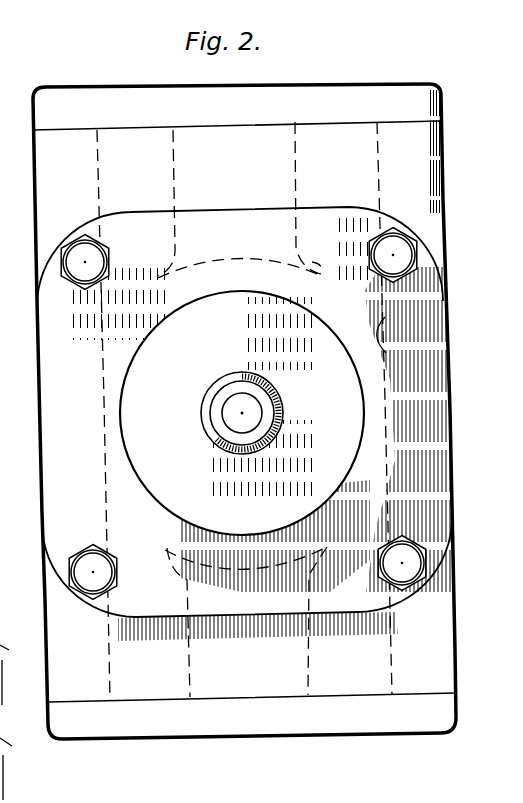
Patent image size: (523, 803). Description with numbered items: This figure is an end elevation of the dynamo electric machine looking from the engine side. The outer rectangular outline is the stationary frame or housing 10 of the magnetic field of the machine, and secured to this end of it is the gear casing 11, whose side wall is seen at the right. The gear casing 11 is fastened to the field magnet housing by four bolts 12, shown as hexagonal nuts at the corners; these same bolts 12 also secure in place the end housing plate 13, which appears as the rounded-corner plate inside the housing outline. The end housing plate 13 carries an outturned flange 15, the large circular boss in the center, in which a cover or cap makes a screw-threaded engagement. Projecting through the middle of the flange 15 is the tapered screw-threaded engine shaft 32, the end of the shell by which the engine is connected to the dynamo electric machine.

The stationary frame or housing 10 is at (399, 85).
The gear casing 11 is at (451, 428).
The bolts 12 is at (77, 252).
The end housing plate 13 is at (330, 217).
The outturned flange 15 is at (329, 327).
The engine shaft 32 is at (218, 413).